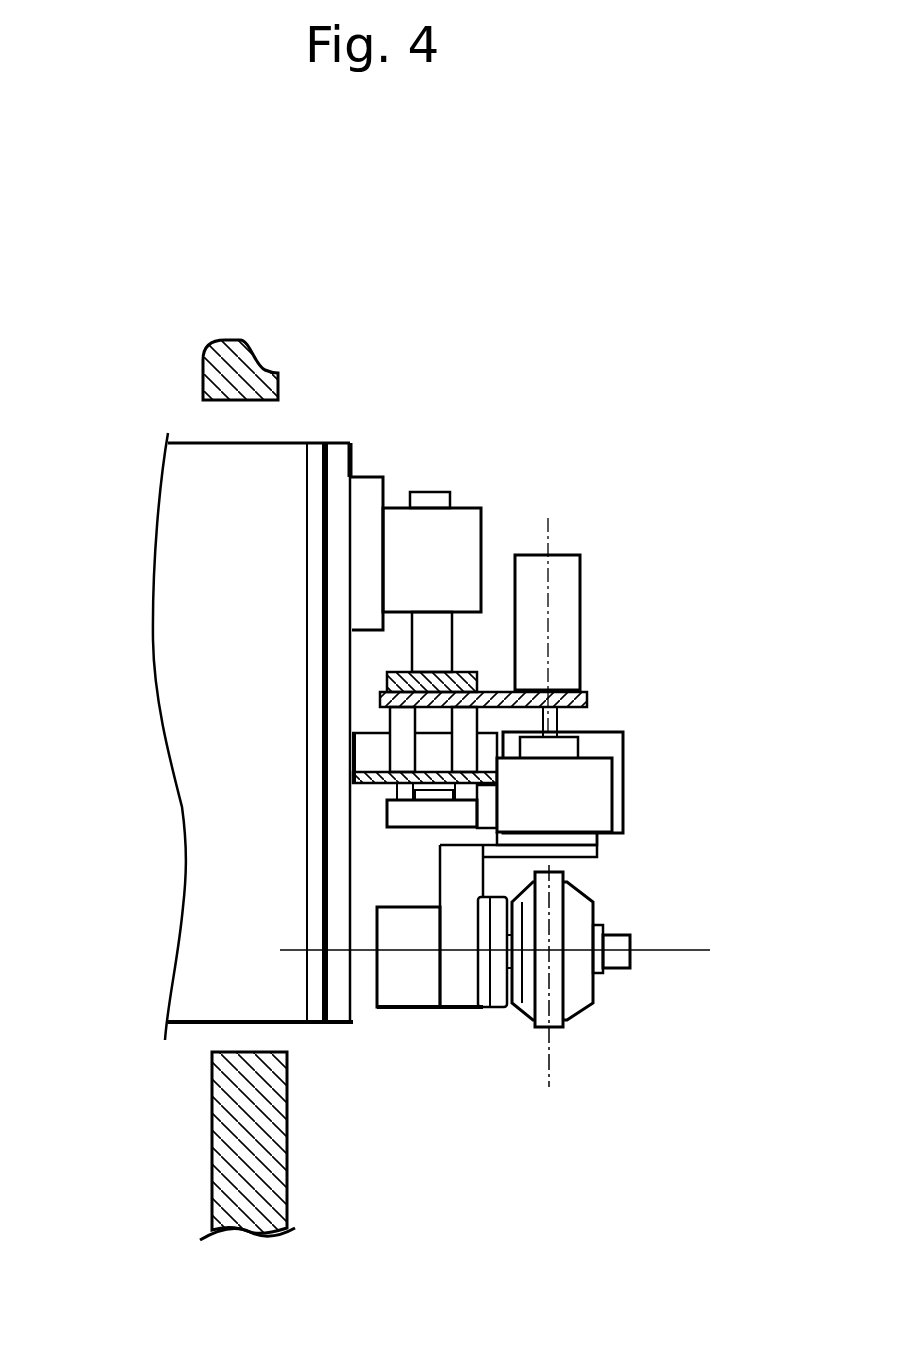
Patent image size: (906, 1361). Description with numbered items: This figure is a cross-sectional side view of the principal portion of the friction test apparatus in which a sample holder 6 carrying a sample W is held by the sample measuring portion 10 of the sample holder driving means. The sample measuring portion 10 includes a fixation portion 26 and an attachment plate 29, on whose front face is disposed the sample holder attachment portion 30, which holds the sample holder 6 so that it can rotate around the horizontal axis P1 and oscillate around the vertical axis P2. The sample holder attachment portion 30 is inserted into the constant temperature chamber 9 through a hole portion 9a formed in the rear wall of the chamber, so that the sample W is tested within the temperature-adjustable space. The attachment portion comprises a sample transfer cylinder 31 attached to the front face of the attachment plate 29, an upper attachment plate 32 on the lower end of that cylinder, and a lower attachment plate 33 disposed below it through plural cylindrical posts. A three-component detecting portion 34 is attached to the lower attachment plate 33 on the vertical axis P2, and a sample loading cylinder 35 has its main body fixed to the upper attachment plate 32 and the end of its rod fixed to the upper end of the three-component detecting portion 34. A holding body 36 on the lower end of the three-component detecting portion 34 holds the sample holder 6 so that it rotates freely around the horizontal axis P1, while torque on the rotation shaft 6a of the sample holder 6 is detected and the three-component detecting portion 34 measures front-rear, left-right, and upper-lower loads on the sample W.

The sample holder 6 is at (600, 1012).
The rotation shaft 6a is at (611, 929).
The constant temperature chamber 9 is at (227, 336).
The hole portion 9a is at (232, 1045).
The sample measuring portion 10 is at (424, 415).
The fixation portion 26 is at (285, 438).
The attachment plate 29 is at (337, 438).
The sample holder attachment portion 30 is at (431, 1026).
The sample transfer cylinder 31 is at (483, 511).
The upper attachment plate 32 is at (383, 702).
The lower attachment plate 33 is at (380, 772).
The three-component detecting portion 34 is at (602, 798).
The sample loading cylinder 35 is at (585, 605).
The holding body 36 is at (457, 877).
The sample W is at (523, 1012).
The horizontal axis P1 is at (678, 948).
The vertical axis P2 is at (550, 1053).